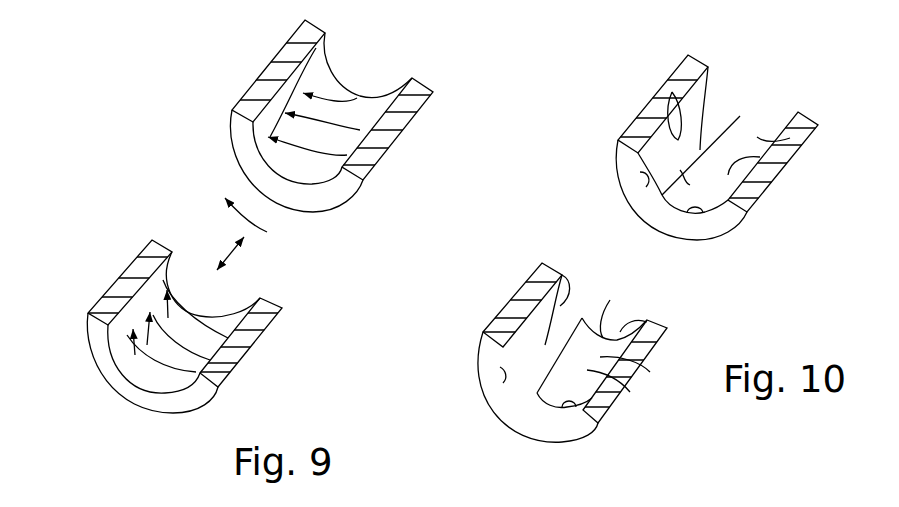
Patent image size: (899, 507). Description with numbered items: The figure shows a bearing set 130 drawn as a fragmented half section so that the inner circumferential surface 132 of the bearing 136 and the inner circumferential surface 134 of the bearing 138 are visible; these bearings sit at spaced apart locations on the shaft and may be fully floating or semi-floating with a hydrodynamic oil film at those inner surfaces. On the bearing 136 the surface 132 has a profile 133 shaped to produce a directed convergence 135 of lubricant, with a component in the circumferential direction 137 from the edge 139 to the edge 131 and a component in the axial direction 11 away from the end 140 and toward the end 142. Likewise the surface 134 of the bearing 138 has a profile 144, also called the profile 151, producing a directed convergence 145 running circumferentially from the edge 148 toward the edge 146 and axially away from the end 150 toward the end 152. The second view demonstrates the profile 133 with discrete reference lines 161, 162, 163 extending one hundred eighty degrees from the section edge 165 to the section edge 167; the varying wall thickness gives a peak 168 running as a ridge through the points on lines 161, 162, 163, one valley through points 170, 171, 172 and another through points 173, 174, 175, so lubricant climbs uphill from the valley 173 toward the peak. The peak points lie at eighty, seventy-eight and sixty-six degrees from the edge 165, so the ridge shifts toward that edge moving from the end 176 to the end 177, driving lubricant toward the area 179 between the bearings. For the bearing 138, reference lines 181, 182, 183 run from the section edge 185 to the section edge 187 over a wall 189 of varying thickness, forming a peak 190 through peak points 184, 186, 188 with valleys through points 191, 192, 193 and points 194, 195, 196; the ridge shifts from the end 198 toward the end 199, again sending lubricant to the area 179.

In FIG. 9, the axial direction 11 is at (238, 250).
In FIG. 9, the bearing set 130 is at (306, 128).
In FIG. 9, the edge 131 is at (247, 110).
In FIG. 9, the inner circumferential surface 132 is at (353, 105).
In FIG. 10, the inner circumferential surface 132 is at (757, 140).
In FIG. 9, the profile 133 is at (340, 140).
In FIG. 10, the profile 133 is at (756, 175).
In FIG. 9, the inner circumferential surface 134 is at (110, 300).
In FIG. 10, the inner circumferential surface 134 is at (497, 330).
In FIG. 9, the directed convergence 135 is at (303, 125).
In FIG. 9, the bearing 136 is at (418, 117).
In FIG. 10, the bearing 136 is at (812, 139).
In FIG. 9, the circumferential direction 137 is at (237, 218).
In FIG. 9, the bearing 138 is at (253, 353).
In FIG. 10, the bearing 138 is at (667, 343).
In FIG. 9, the edge 139 is at (387, 137).
In FIG. 9, the end 140 is at (330, 67).
In FIG. 9, the end 142 is at (302, 197).
In FIG. 9, the profile 144 is at (166, 288).
In FIG. 9, the directed convergence 145 is at (150, 310).
In FIG. 9, the edge 146 is at (90, 315).
In FIG. 9, the edge 148 is at (260, 333).
In FIG. 9, the end 150 is at (137, 393).
In FIG. 9, the profile 151 is at (200, 360).
In FIG. 10, the profile 151 is at (625, 356).
In FIG. 9, the end 152 is at (183, 290).
In FIG. 10, the reference line 161 is at (757, 137).
In FIG. 10, the reference line 162 is at (701, 80).
In FIG. 10, the reference line 163 is at (662, 195).
In FIG. 10, the section edge 165 is at (657, 112).
In FIG. 10, the section edge 167 is at (760, 193).
In FIG. 10, the peak 168 is at (680, 170).
In FIG. 10, the valley point 170 is at (737, 117).
In FIG. 10, the valley point 171 is at (657, 107).
In FIG. 10, the valley point 172 is at (650, 186).
In FIG. 10, the valley point 173 is at (760, 143).
In FIG. 10, the valley point 174 is at (728, 177).
In FIG. 10, the valley point 175 is at (690, 212).
In FIG. 10, the end 176 is at (752, 142).
In FIG. 10, the end 177 is at (666, 222).
In FIG. 10, the area 179 is at (574, 329).
In FIG. 10, the reference line 181 is at (507, 340).
In FIG. 10, the reference line 182 is at (523, 305).
In FIG. 10, the reference line 183 is at (567, 287).
In FIG. 10, the peak point 184 is at (582, 318).
In FIG. 10, the section edge 185 is at (527, 298).
In FIG. 10, the peak point 186 is at (543, 372).
In FIG. 10, the section edge 187 is at (620, 400).
In FIG. 10, the peak point 188 is at (548, 413).
In FIG. 10, the wall 189 is at (500, 337).
In FIG. 10, the peak 190 is at (507, 393).
In FIG. 10, the valley point 191 is at (582, 317).
In FIG. 10, the valley point 192 is at (542, 263).
In FIG. 10, the valley point 193 is at (503, 378).
In FIG. 10, the valley point 194 is at (620, 337).
In FIG. 10, the valley point 195 is at (605, 393).
In FIG. 10, the valley point 196 is at (567, 407).
In FIG. 10, the end 198 is at (510, 420).
In FIG. 10, the end 199 is at (603, 320).